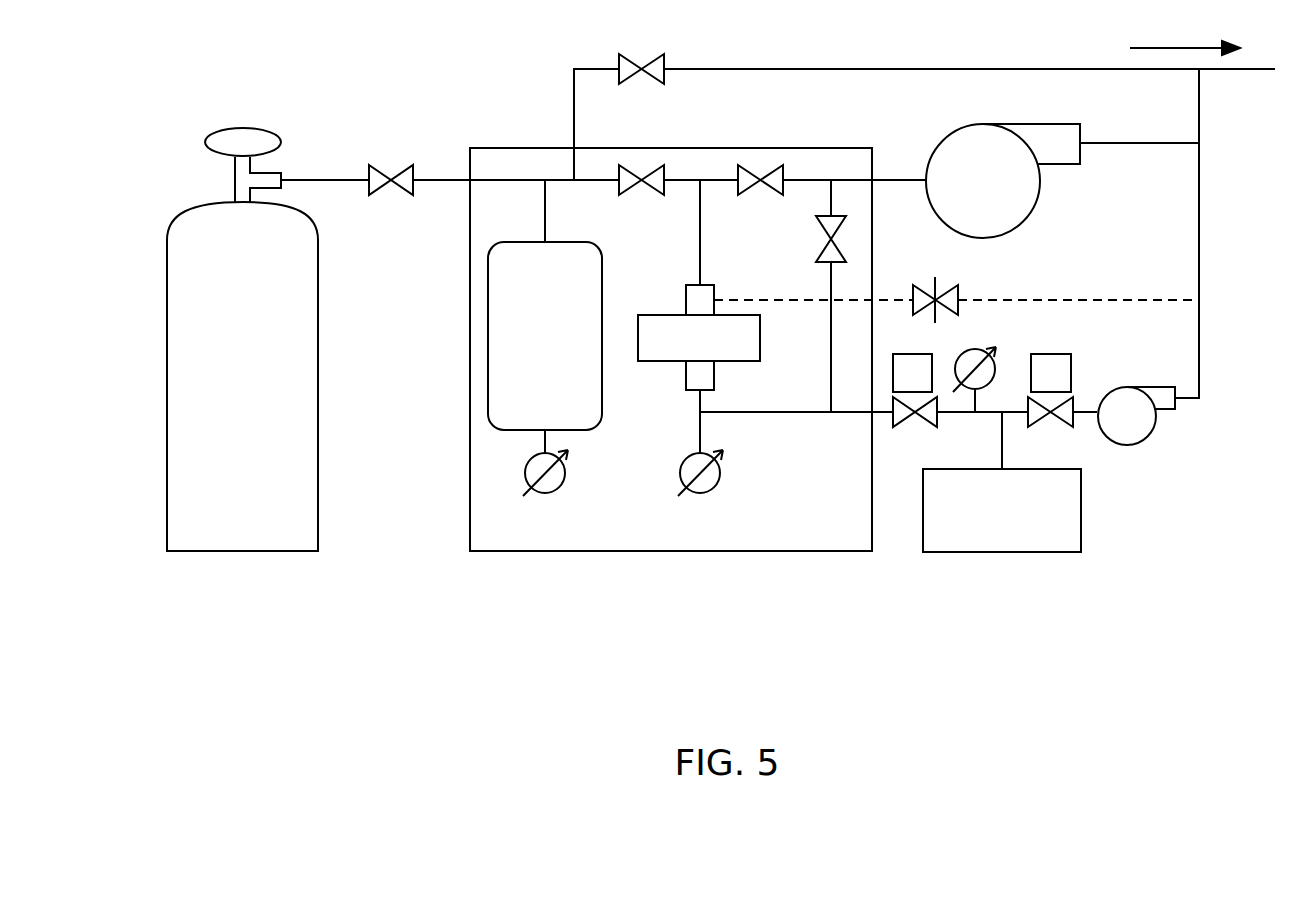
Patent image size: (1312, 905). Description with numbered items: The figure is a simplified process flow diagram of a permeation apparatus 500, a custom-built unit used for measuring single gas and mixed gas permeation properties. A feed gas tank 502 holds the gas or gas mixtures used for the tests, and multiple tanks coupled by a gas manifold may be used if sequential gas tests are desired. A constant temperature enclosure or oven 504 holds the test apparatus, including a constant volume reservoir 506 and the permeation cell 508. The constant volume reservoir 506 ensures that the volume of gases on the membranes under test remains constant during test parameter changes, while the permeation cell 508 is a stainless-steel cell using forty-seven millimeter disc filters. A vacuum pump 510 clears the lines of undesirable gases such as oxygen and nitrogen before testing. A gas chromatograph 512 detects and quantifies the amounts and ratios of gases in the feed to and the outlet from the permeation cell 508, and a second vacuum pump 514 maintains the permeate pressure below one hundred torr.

The permeation apparatus 500 is at (685, 372).
The feed gas tank 502 is at (167, 375).
The constant temperature enclosure or oven 504 is at (470, 440).
The constant volume reservoir 506 is at (597, 432).
The permeation cell 508 is at (674, 313).
The vacuum pump 510 is at (978, 123).
The gas chromatograph 512 is at (1081, 501).
The second vacuum pump 514 is at (1148, 440).